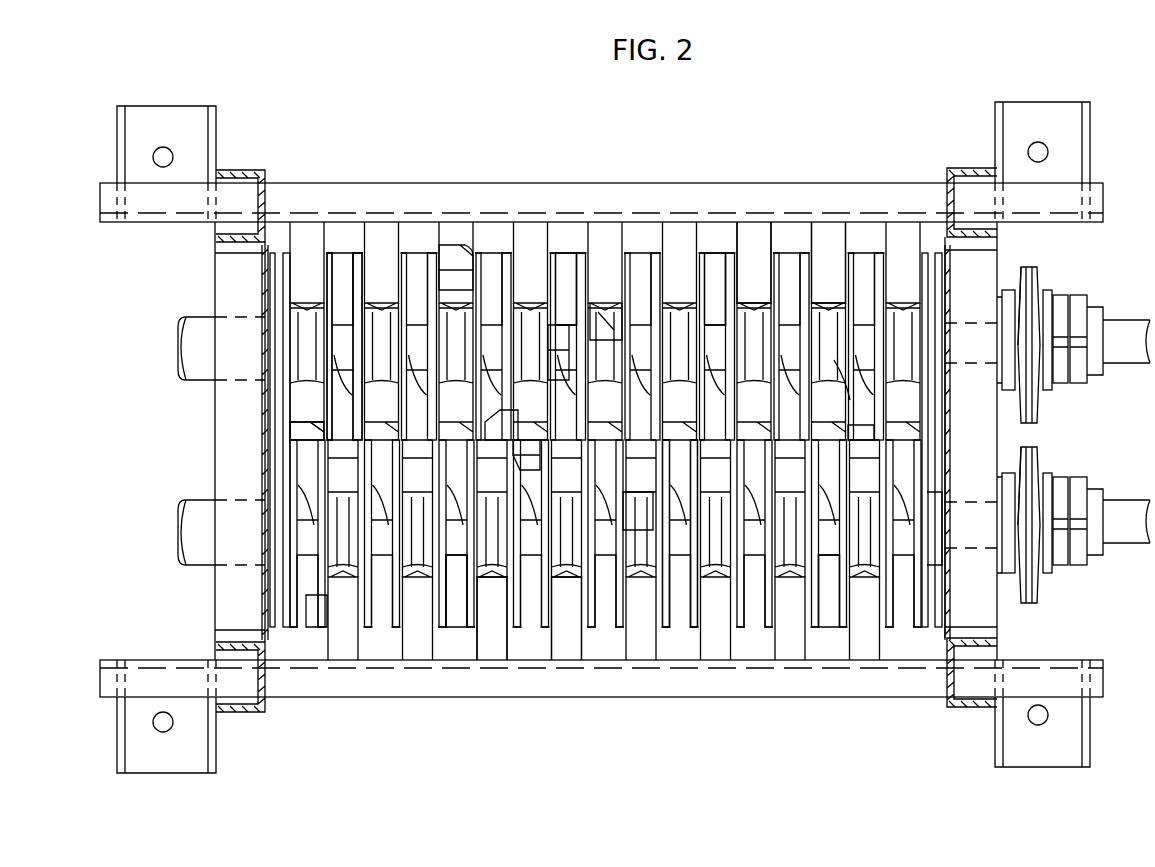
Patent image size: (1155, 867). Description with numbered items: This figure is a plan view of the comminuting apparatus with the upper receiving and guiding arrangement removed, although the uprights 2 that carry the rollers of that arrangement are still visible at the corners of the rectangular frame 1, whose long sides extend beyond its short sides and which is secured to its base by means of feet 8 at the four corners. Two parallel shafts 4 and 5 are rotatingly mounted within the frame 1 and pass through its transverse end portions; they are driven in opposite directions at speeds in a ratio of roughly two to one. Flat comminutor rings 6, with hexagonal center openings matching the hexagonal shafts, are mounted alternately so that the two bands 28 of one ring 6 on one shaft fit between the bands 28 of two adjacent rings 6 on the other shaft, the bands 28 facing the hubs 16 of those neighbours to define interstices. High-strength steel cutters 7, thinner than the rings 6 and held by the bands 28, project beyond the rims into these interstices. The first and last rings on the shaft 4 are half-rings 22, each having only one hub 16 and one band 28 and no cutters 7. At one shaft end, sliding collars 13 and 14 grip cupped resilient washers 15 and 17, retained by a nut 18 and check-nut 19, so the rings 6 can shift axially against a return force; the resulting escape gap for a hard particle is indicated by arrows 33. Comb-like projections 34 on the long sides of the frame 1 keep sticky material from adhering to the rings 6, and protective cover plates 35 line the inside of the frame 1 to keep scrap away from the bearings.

The frame 1 is at (400, 200).
The uprights 2 is at (238, 172).
The shaft 4 is at (202, 520).
The shaft 5 is at (202, 342).
The comminutor ring 6 is at (567, 258).
The cutter 7 is at (492, 245).
The mounting bracket 8 is at (160, 113).
The sliding collar 13 is at (1010, 392).
The sliding collar 14 is at (1047, 392).
The cupped resilient washer 15 is at (1027, 268).
The hub 16 is at (614, 325).
The cupped resilient washer 17 is at (1035, 268).
The nut 18 is at (1060, 385).
The check-nut 19 is at (1080, 385).
The half-ring 22 is at (277, 278).
The band 28 is at (355, 255).
The arrows 33 is at (512, 430).
The comb-like projection 34 is at (830, 245).
The protective cover plate 35 is at (265, 465).